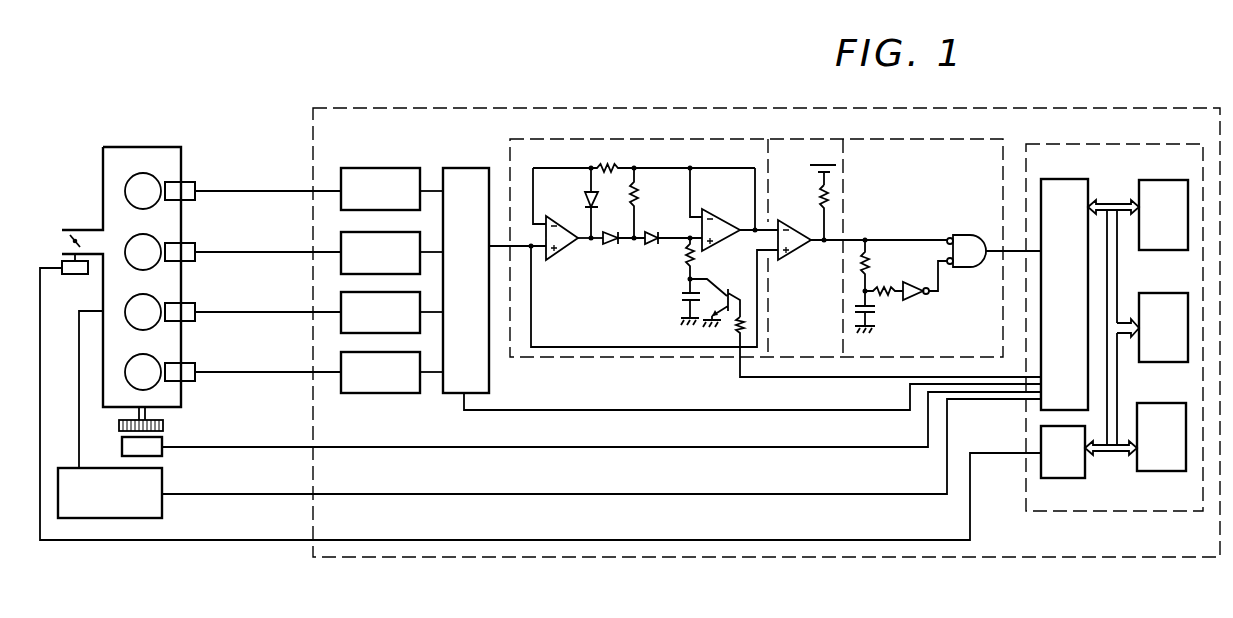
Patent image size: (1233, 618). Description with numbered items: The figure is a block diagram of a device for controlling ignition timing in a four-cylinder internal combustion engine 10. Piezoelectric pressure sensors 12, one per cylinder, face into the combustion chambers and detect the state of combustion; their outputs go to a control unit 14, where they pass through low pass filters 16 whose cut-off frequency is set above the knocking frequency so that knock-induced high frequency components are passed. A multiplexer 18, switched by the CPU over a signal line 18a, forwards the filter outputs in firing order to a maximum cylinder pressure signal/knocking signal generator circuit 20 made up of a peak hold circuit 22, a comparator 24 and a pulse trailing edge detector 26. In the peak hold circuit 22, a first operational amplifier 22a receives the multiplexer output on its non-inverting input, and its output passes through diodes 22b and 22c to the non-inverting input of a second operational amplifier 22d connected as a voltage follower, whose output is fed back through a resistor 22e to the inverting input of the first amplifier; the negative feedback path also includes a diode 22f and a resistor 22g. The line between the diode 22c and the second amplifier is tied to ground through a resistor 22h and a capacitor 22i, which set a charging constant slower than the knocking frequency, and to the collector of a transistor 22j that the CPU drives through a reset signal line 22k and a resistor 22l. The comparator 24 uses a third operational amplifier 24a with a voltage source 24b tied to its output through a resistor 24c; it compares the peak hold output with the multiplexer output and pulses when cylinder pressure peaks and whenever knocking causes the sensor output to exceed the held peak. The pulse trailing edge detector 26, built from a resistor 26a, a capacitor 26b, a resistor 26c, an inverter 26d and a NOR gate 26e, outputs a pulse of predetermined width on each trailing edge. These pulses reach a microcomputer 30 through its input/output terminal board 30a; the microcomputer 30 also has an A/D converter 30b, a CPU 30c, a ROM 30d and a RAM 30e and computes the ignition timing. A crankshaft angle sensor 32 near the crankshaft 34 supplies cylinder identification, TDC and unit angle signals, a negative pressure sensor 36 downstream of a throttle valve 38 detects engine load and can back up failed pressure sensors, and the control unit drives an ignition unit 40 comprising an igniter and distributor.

The internal combustion engine 10 is at (150, 147).
The piezoelectric pressure sensor 12 is at (190, 182).
The control unit 14 is at (397, 108).
The low pass filter 16 is at (379, 168).
The multiplexer 18 is at (465, 168).
The signal line 18a is at (464, 410).
The maximum cylinder pressure signal/knocking signal generator circuit 20 is at (697, 139).
The peak hold circuit 22 is at (573, 139).
The first operational amplifier 22a is at (555, 260).
The diode 22b is at (608, 242).
The diode 22c is at (650, 236).
The second operational amplifier 22d is at (724, 213).
The resistor 22e is at (606, 168).
The diode 22f is at (583, 198).
The resistor 22g is at (638, 196).
The resistor 22h is at (686, 255).
The capacitor 22i is at (680, 298).
The transistor 22j is at (729, 289).
The reset signal line 22k is at (740, 373).
The resistor 22l is at (744, 324).
The comparator 24 is at (786, 139).
The third operational amplifier 24a is at (794, 228).
The voltage source 24b is at (838, 167).
The resistor 24c is at (830, 197).
The pulse trailing edge detector 26 is at (897, 139).
The resistor 26a is at (868, 265).
The capacitor 26b is at (876, 316).
The resistor 26c is at (886, 294).
The inverter 26d is at (929, 294).
The NOR gate 26e is at (950, 234).
The microcomputer 30 is at (1055, 144).
The input/output terminal board 30a is at (1065, 174).
The A/D converter 30b is at (1058, 478).
The CPU 30c is at (1156, 174).
The ROM 30d is at (1153, 288).
The RAM 30e is at (1152, 398).
The crankshaft angle sensor 32 is at (162, 448).
The crankshaft 34 is at (165, 426).
The negative pressure sensor 36 is at (74, 274).
The throttle valve 38 is at (76, 240).
The ignition unit 40 is at (162, 508).